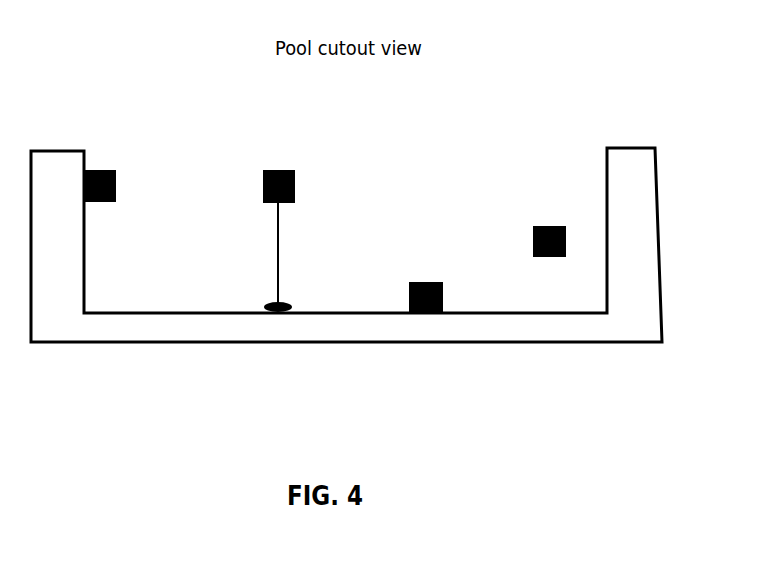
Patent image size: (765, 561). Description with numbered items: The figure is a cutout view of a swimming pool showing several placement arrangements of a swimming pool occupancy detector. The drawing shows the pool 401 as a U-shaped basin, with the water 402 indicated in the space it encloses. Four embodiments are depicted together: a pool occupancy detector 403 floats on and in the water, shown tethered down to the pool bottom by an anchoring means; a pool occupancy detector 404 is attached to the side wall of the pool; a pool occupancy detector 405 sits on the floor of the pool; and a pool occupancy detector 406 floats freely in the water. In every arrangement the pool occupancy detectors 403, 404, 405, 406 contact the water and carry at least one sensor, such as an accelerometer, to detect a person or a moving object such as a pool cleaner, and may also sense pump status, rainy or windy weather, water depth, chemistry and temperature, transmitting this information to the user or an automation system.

The pool 401 is at (633, 143).
The water 402 is at (390, 185).
The pool occupancy detector 403 is at (287, 164).
The pool occupancy detector 404 is at (107, 165).
The pool occupancy detector 405 is at (405, 302).
The pool occupancy detector 406 is at (540, 219).